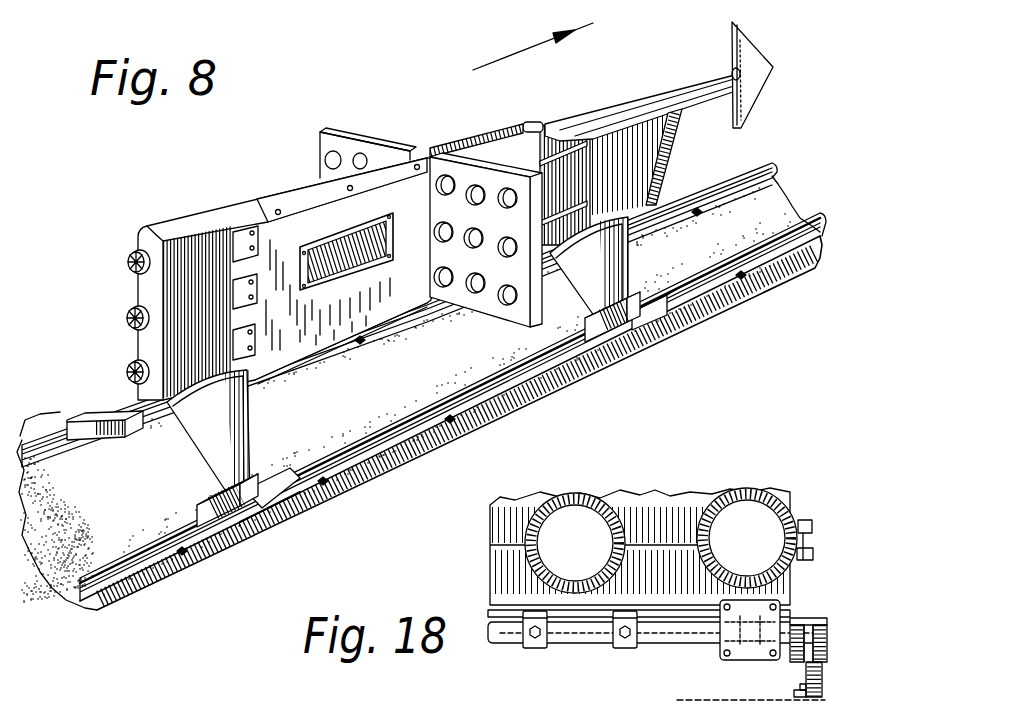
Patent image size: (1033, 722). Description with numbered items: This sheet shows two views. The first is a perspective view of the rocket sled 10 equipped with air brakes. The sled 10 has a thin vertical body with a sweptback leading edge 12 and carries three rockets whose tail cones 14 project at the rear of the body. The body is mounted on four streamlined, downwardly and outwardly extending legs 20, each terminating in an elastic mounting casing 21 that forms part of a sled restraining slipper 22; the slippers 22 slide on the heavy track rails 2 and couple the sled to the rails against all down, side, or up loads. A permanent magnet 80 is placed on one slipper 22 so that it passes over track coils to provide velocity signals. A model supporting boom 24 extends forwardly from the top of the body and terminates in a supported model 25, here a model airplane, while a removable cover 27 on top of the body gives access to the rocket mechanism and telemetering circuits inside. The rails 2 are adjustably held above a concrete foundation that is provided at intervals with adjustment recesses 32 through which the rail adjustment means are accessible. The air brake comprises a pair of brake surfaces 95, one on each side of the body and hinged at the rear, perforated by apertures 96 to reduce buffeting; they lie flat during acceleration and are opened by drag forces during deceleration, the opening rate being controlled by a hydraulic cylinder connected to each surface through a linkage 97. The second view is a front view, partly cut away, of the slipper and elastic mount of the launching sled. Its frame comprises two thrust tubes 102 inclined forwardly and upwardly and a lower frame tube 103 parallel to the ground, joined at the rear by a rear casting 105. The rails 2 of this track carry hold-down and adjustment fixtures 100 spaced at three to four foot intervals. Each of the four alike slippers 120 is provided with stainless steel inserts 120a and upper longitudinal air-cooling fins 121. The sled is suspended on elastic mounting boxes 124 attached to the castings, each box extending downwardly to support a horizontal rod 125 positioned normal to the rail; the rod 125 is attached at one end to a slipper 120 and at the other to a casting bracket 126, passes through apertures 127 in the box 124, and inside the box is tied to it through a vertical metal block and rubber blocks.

In FIG. 8, the track rails 2 is at (516, 364).
In FIG. 18, the track rails 2 is at (800, 686).
In FIG. 8, the sled 10 is at (237, 198).
In FIG. 8, the sweptback leading edge 12 is at (665, 165).
In FIG. 8, the tail cones 14 is at (128, 262).
In FIG. 8, the legs 20 is at (605, 272).
In FIG. 8, the elastic mounting casing 21 is at (592, 316).
In FIG. 8, the slippers 22 is at (665, 312).
In FIG. 8, the model supporting boom 24 is at (660, 66).
In FIG. 8, the supported model 25 is at (750, 55).
In FIG. 8, the removable cover 27 is at (298, 196).
In FIG. 8, the adjustment recesses 32 is at (382, 413).
In FIG. 8, the permanent magnet 80 is at (258, 508).
In FIG. 8, the brake surfaces 95 is at (383, 147).
In FIG. 8, the apertures 96 is at (335, 154).
In FIG. 8, the linkage 97 is at (590, 176).
In FIG. 8, the hold-down and adjustment fixtures 100 is at (742, 276).
In FIG. 18, the hold-down and adjustment fixtures 100 is at (790, 700).
In FIG. 18, the thrust tubes 102 is at (780, 506).
In FIG. 18, the lower frame tube 103 is at (578, 500).
In FIG. 18, the rear casting 105 is at (628, 505).
In FIG. 18, the slippers 120 is at (782, 656).
In FIG. 18, the stainless steel inserts 120a is at (818, 692).
In FIG. 18, the air-cooling fins 121 is at (806, 632).
In FIG. 18, the elastic mounting boxes 124 is at (755, 600).
In FIG. 18, the horizontal rod 125 is at (514, 633).
In FIG. 18, the casting bracket 126 is at (620, 618).
In FIG. 18, the apertures 127 is at (710, 642).